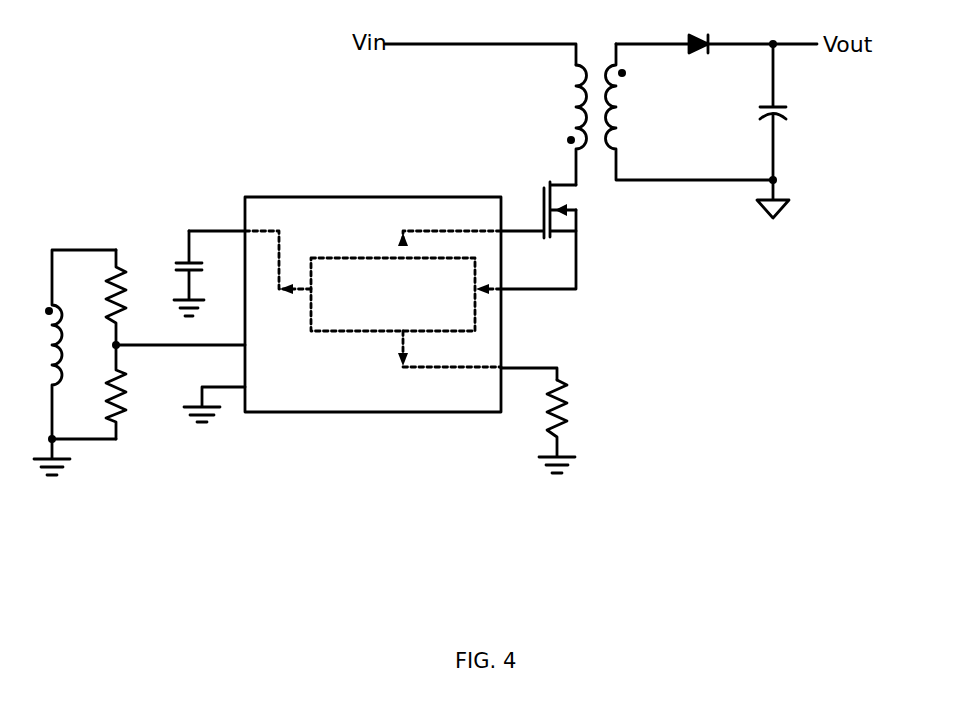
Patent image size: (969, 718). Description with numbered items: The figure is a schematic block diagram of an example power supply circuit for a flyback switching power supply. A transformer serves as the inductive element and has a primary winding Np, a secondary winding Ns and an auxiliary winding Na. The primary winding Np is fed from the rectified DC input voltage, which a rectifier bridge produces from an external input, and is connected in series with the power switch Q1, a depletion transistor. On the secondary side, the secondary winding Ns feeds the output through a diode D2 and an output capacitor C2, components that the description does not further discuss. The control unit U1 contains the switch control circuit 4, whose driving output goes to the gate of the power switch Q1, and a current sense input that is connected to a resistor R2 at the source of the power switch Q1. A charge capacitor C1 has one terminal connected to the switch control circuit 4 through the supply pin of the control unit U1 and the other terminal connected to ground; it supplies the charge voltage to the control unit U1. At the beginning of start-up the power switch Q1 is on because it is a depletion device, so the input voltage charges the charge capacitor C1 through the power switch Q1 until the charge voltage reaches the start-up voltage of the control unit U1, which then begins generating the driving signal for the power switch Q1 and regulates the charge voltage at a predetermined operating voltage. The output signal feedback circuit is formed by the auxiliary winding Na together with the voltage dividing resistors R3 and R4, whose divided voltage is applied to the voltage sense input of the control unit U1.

The switch control circuit 4 is at (346, 258).
The control unit U1 is at (412, 195).
The power switch Q1 is at (558, 210).
The output rectifier diode D2 is at (700, 59).
The charge capacitor C1 is at (204, 273).
The output capacitor C2 is at (788, 129).
The current sense resistor R2 is at (570, 426).
The voltage dividing resistor R3 is at (133, 297).
The voltage dividing resistor R4 is at (133, 390).
The primary winding Np is at (565, 125).
The secondary winding Ns is at (690, 112).
The auxiliary winding Na is at (68, 362).